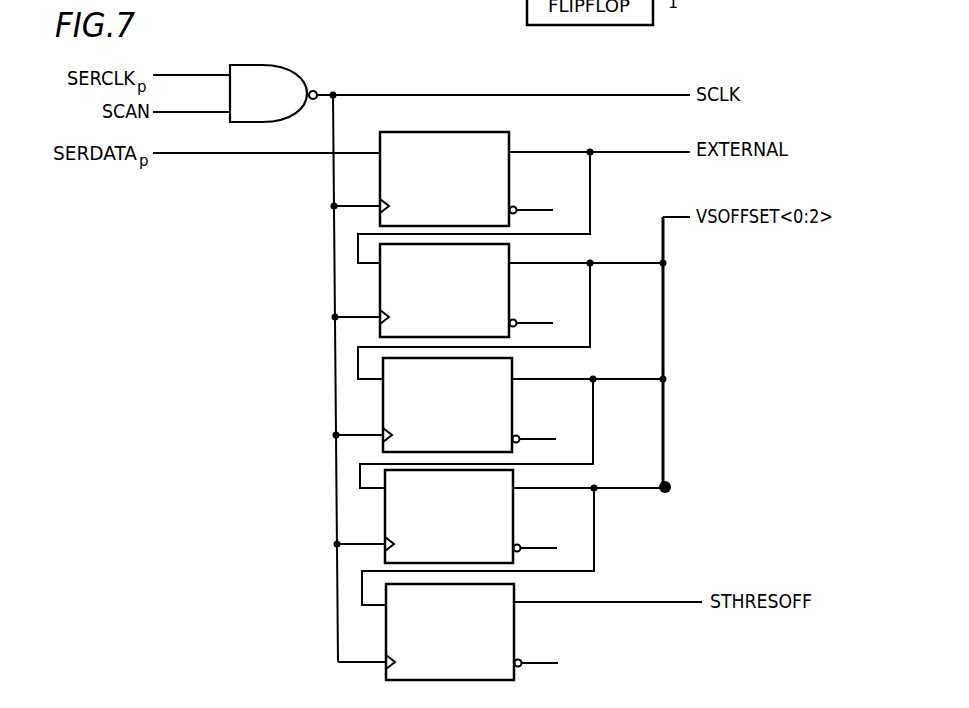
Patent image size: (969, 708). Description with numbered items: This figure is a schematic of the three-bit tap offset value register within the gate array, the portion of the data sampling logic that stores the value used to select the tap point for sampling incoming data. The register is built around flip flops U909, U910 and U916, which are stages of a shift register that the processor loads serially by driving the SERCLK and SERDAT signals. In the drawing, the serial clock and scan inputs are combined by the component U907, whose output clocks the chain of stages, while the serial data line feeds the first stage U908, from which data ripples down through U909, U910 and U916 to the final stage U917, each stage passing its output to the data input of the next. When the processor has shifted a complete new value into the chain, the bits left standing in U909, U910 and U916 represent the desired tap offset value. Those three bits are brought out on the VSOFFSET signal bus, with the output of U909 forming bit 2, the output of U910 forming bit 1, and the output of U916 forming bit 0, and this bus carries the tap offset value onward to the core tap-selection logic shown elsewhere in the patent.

The NAND gate ND2P U907 is at (273, 93).
The flip-flop FD1 (EXTERNAL) U908 is at (443, 179).
The flip flop U909 is at (443, 290).
The flip flop U910 is at (445, 405).
The flip flop U916 is at (446, 516).
The flip-flop FD1 (STHRESOFF) U917 is at (448, 632).
The VSOFFSET bus bit 2 line 2 is at (512, 310).
The VSOFFSET bus bit 1 line 1 is at (513, 423).
The VSOFFSET bus bit 0 line 0 is at (516, 536).